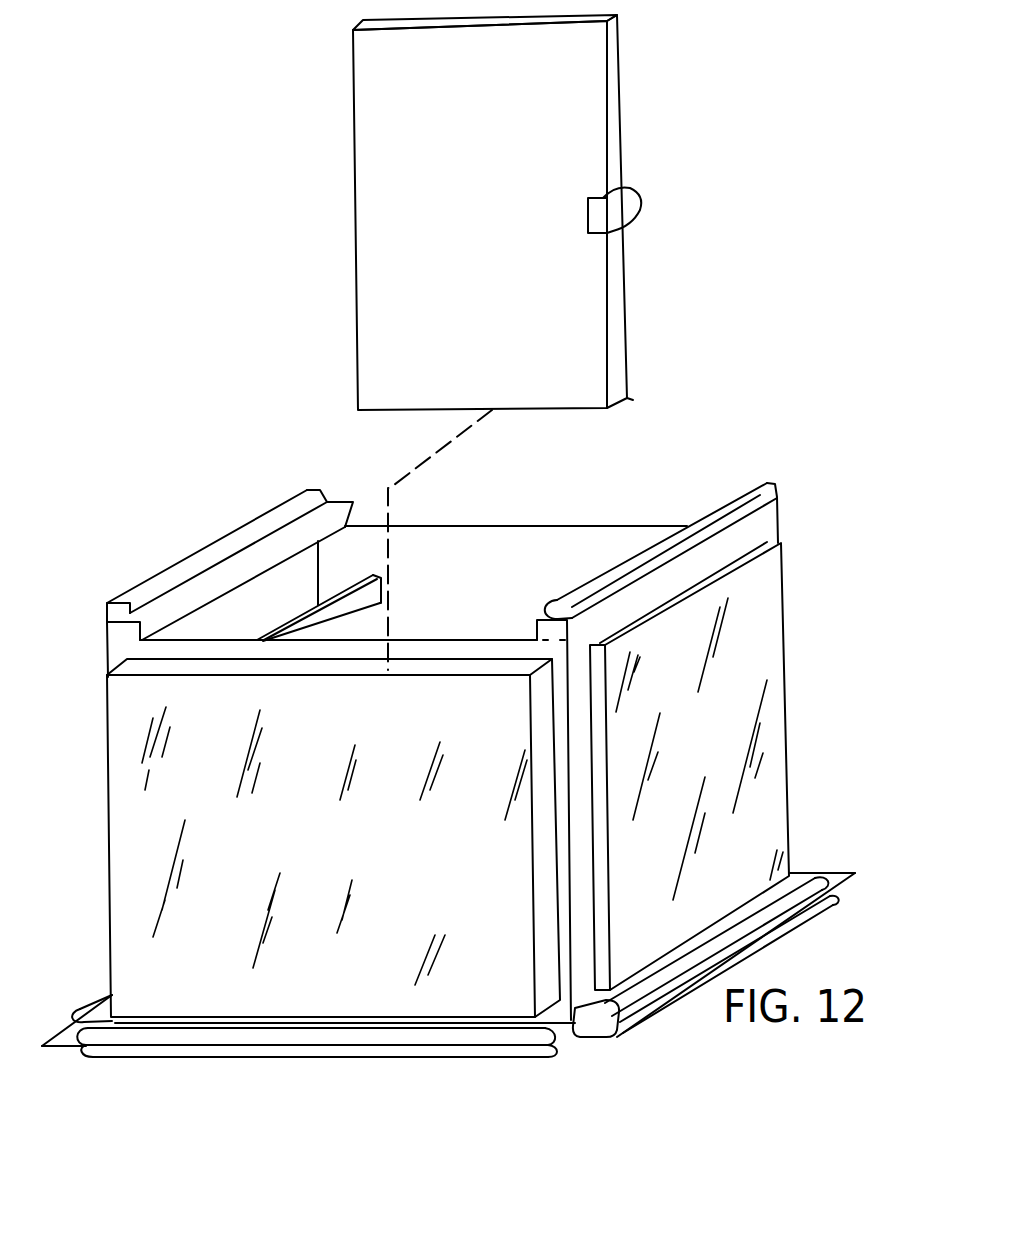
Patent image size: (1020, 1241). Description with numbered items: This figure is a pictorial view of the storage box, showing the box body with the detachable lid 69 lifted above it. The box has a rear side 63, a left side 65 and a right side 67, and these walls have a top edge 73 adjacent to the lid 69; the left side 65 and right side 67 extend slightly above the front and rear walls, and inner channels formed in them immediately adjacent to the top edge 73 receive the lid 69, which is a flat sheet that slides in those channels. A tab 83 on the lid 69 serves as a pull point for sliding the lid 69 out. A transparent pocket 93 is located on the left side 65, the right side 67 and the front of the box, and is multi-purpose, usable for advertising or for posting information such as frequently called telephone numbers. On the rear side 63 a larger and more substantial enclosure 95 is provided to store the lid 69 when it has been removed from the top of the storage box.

The lid 69 is at (560, 100).
The tab 83 is at (640, 193).
The top edge 73 is at (187, 560).
The right side 67 is at (105, 655).
The left side 65 is at (767, 527).
The pocket 93 is at (757, 638).
The enclosure 95 is at (162, 813).
The rear side 63 is at (593, 1037).